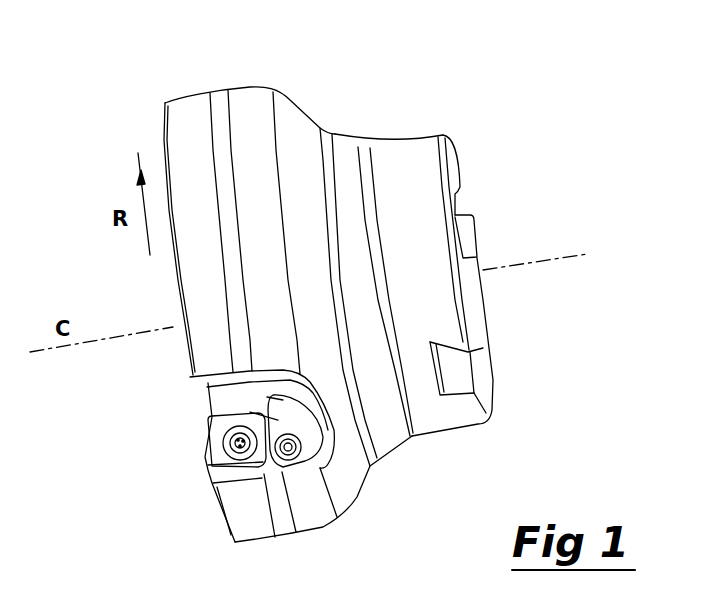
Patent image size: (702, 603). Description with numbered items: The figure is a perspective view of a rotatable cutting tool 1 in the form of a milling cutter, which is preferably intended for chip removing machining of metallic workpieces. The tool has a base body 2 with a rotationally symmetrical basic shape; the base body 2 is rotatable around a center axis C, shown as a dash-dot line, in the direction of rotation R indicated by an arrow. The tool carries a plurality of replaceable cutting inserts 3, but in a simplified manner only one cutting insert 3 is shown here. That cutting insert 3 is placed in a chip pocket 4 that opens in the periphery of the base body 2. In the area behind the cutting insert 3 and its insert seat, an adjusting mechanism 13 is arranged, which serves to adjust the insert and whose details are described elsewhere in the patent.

The cutting tool 1 is at (393, 98).
The base body 2 is at (370, 485).
The cutting insert 3 is at (203, 480).
The chip pocket 4 is at (203, 400).
The adjusting mechanism 13 is at (296, 470).